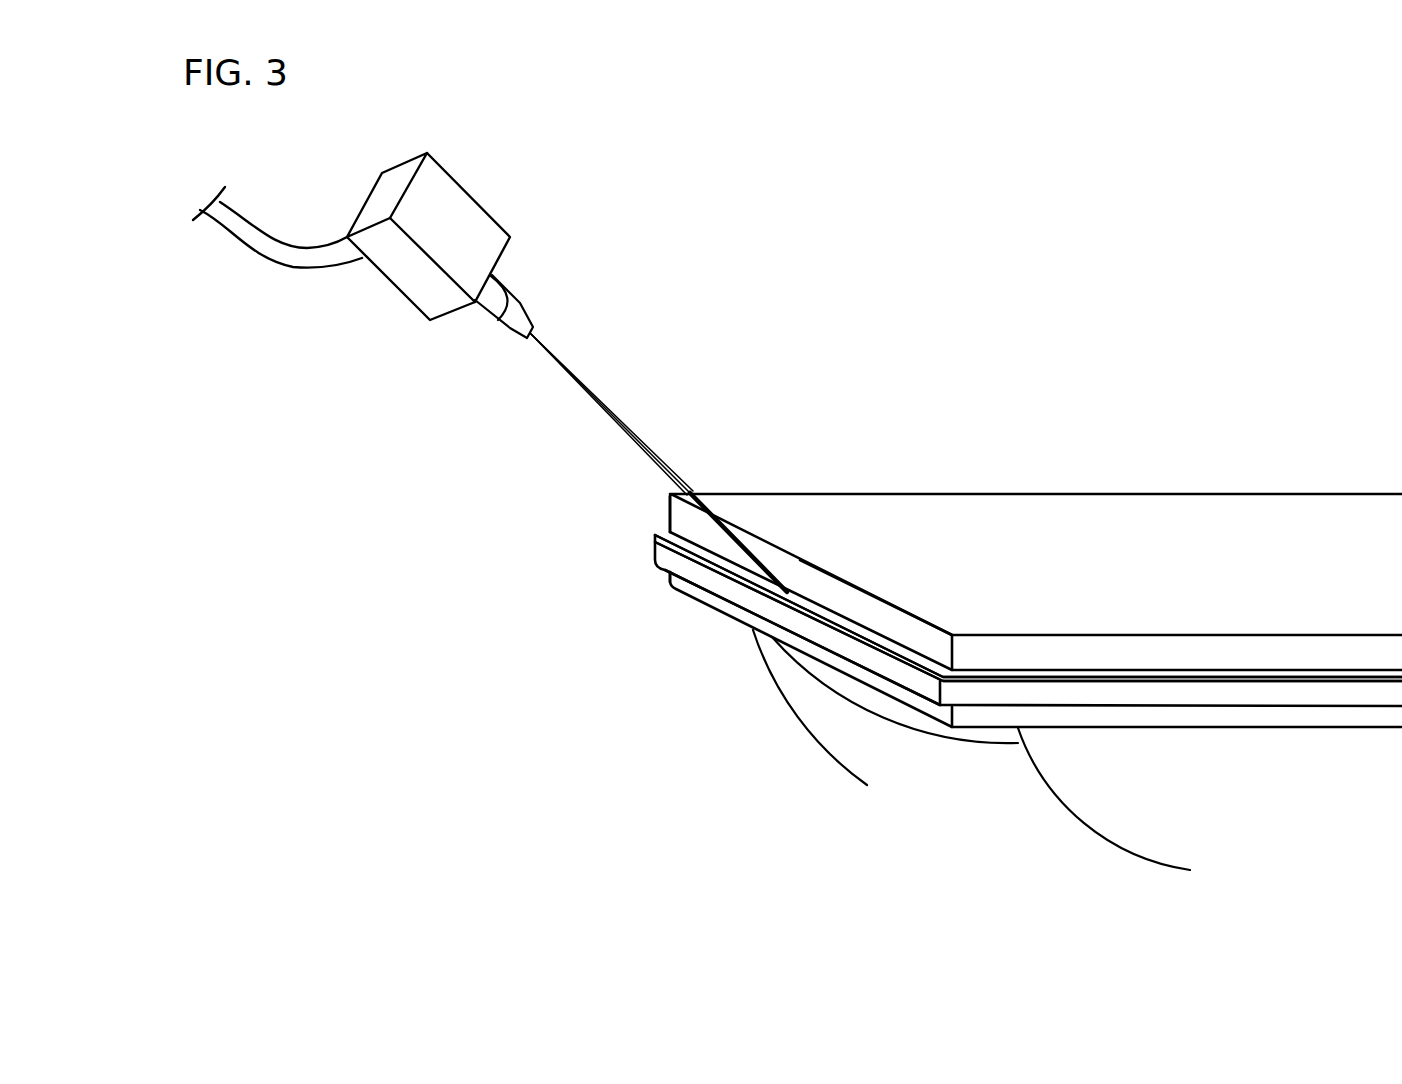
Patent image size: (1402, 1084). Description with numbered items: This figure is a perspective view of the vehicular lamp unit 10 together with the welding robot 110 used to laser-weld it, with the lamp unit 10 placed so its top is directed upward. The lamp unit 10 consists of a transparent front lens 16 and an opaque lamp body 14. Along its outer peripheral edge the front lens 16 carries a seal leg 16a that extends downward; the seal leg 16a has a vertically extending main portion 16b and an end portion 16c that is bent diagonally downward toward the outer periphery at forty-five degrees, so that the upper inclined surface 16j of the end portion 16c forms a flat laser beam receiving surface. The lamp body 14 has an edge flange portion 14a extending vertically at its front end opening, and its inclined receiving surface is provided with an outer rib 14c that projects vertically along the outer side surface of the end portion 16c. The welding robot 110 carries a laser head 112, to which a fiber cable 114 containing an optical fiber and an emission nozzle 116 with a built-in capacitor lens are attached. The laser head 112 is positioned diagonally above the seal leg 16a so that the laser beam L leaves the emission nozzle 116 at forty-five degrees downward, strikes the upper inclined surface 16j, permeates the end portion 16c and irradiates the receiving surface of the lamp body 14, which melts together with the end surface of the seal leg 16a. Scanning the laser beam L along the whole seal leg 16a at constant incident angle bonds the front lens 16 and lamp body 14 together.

The vehicular lamp unit 10 is at (1008, 442).
The lamp body 14 is at (827, 743).
The edge flange portion 14a is at (667, 578).
The outer rib 14c is at (750, 598).
The front lens 16 is at (1242, 515).
The seal leg 16a is at (667, 515).
The main portion 16b is at (903, 630).
The end portion 16c is at (825, 608).
The upper inclined surface 16j is at (1028, 608).
The welding robot 110 is at (333, 385).
The laser head 112 is at (457, 217).
The fiber cable 114 is at (265, 255).
The emission nozzle 116 is at (522, 305).
The laser beam L is at (628, 432).